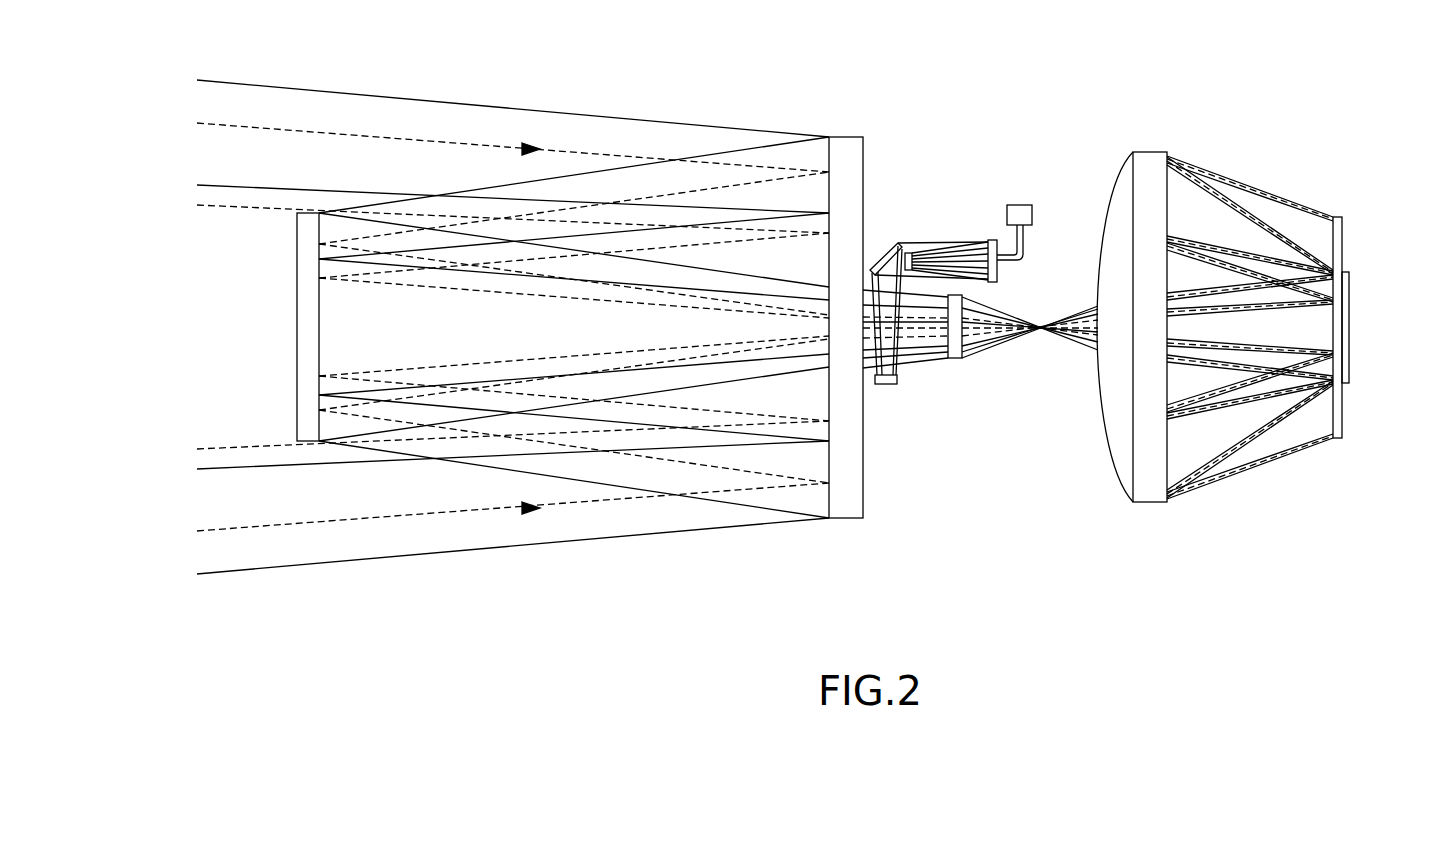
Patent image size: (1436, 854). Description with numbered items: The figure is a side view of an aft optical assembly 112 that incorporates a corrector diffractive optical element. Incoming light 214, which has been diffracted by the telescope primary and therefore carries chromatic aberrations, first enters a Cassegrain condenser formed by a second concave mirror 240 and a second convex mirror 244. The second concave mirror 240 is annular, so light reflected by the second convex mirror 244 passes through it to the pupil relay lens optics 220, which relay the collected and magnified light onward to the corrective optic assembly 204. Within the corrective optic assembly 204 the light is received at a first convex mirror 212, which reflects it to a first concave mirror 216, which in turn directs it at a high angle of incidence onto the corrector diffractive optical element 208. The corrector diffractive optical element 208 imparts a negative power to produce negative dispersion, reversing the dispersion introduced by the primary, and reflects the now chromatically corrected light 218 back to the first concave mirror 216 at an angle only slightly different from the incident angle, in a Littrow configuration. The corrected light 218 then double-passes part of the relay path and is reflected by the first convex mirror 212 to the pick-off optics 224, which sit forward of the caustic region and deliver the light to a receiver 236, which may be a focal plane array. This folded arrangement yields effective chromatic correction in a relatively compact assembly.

The aft optical assembly 112 is at (818, 70).
The corrective optic assembly 204 is at (1190, 97).
The light 214 is at (458, 132).
The second concave mirror 240 is at (860, 137).
The second convex mirror 244 is at (297, 432).
The pick-off optics 224 is at (892, 228).
The receiver 236 is at (1020, 205).
The pupil relay lens optics 220 is at (955, 360).
The chromatically corrected light 218 is at (1248, 190).
The first concave mirror 216 is at (1170, 488).
The corrector diffractive optical element 208 is at (1343, 238).
The first convex mirror 212 is at (1320, 330).